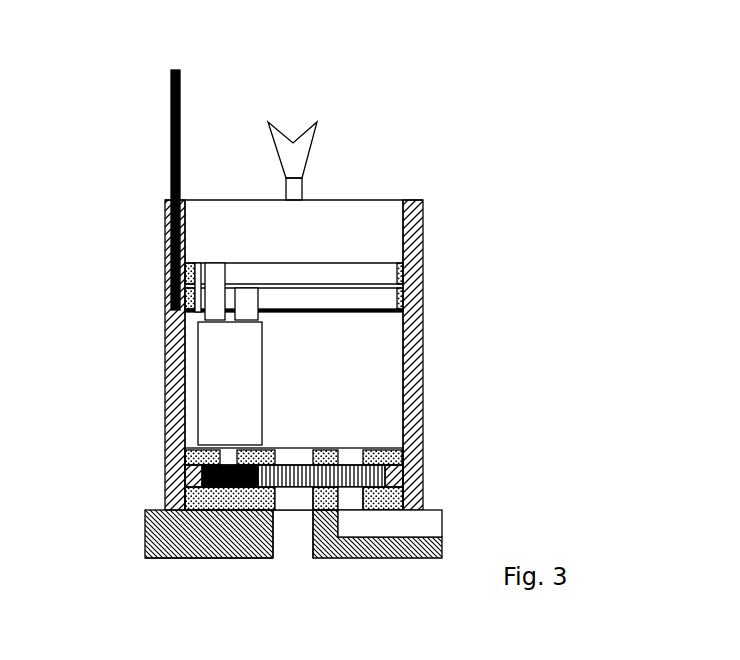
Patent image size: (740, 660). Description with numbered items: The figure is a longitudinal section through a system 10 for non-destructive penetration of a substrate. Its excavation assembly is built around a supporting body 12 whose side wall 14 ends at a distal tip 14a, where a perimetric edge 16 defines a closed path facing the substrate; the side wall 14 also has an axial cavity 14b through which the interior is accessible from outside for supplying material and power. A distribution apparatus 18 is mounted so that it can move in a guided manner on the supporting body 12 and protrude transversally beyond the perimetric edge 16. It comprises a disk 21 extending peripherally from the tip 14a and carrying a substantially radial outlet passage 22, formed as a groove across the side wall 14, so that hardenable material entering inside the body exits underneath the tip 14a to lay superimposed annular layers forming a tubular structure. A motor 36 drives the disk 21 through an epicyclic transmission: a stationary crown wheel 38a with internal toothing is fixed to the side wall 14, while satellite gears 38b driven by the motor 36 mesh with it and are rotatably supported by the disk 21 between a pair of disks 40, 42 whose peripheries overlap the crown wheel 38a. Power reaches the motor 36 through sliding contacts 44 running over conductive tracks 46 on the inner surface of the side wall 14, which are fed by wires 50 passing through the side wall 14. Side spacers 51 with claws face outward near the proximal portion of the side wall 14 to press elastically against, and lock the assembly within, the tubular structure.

The system for non-destructive penetration of a substrate 10 is at (490, 105).
The supporting body 12 is at (424, 283).
The side wall 14 is at (417, 333).
The distal end or tip 14a is at (418, 530).
The axial cavity 14b is at (401, 230).
The perimetric edge 16 is at (170, 515).
The distribution apparatus 18 is at (392, 560).
The disk 21 is at (208, 535).
The outlet passage 22 is at (427, 527).
The motor 36 is at (214, 397).
The stationary crown wheel 38a is at (403, 477).
The satellite gears 38b is at (348, 492).
The disk 40 is at (423, 430).
The disk 42 is at (190, 493).
The sliding contacts 44 is at (250, 303).
The conductive tracks 46 is at (375, 300).
The wires 50 is at (169, 143).
The side spacers 51 is at (300, 140).